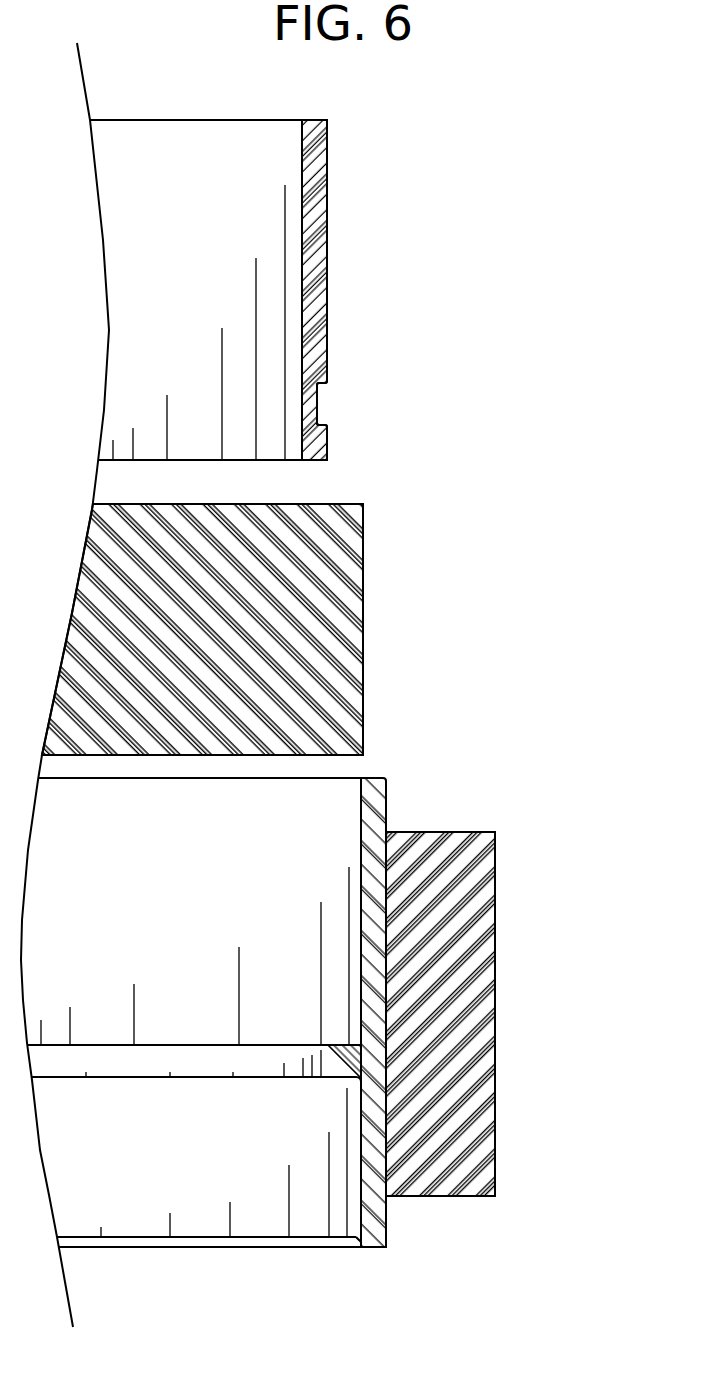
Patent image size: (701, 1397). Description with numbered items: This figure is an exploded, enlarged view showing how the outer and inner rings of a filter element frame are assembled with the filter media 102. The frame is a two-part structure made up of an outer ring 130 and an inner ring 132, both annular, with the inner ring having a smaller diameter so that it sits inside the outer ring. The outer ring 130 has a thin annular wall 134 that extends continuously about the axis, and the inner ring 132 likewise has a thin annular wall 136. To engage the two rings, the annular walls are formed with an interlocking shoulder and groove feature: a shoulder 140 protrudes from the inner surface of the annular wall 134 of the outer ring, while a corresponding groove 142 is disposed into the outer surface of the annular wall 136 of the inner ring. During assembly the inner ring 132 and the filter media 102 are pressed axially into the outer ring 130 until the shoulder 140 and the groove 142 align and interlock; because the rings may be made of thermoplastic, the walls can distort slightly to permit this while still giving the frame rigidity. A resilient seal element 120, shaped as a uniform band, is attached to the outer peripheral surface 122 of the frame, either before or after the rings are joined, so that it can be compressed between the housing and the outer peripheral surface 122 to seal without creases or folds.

The filter media 102 is at (350, 600).
The resilient seal element 120 is at (487, 947).
The outer peripheral surface 122 is at (370, 1230).
The outer ring 130 is at (203, 1185).
The inner ring 132 is at (172, 133).
The annular wall 134 is at (375, 798).
The annular wall 136 is at (320, 217).
The shoulder 140 is at (332, 1078).
The groove 142 is at (323, 403).